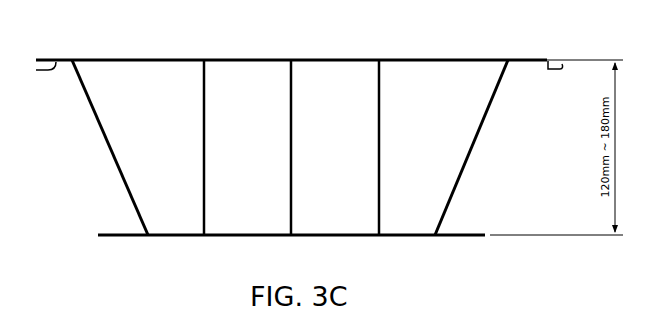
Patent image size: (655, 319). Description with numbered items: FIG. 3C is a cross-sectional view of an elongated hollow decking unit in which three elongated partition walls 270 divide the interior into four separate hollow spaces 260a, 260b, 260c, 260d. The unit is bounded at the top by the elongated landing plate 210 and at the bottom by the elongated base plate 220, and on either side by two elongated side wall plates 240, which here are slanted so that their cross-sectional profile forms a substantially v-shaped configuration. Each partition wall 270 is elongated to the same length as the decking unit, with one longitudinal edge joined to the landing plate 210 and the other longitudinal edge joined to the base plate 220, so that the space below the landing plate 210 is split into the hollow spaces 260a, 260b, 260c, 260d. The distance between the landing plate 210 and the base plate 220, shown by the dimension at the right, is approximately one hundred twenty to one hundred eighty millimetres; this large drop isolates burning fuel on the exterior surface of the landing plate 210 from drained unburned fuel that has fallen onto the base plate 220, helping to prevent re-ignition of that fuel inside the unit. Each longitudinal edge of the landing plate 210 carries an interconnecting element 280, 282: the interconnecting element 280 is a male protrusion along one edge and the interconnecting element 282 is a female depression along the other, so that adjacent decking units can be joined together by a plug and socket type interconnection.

The elongated landing plate 210 is at (185, 59).
The elongated base plate 220 is at (245, 237).
The elongated side wall plates 240 is at (112, 150).
The partition wall 270 is at (203, 150).
The hollow space 260a is at (156, 147).
The hollow space 260b is at (247, 147).
The hollow space 260c is at (335, 147).
The hollow space 260d is at (426, 147).
The interconnecting element 280 is at (561, 60).
The interconnecting element 282 is at (52, 59).